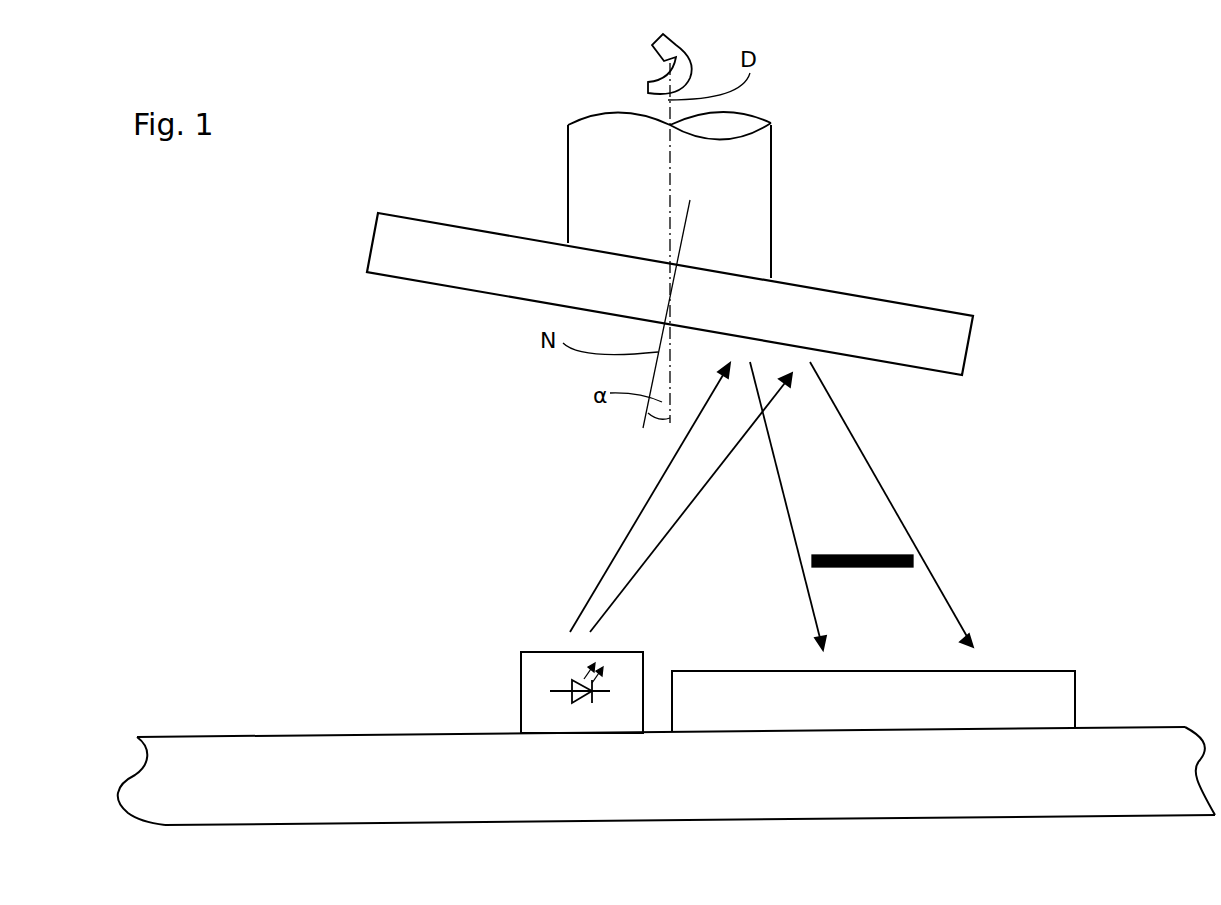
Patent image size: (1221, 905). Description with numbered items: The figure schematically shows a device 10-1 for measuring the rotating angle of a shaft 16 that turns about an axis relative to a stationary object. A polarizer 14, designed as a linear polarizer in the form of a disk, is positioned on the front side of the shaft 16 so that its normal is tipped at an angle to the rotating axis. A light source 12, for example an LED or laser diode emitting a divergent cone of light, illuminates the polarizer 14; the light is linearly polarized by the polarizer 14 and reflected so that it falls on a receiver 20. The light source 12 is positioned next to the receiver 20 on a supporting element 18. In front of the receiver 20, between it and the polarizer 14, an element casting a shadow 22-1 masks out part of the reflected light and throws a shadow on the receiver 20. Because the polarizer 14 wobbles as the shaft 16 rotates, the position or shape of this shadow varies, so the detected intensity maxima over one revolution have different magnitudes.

The device 10-1 is at (960, 148).
The light source 12 is at (532, 673).
The polarizer 14 is at (952, 339).
The shaft 16 is at (750, 222).
The supporting element 18 is at (1145, 757).
The receiver 20 is at (1053, 678).
The element casting a shadow 22-1 is at (893, 555).